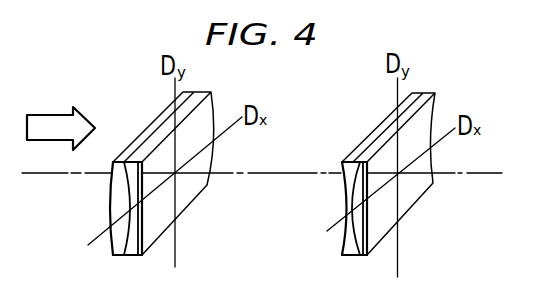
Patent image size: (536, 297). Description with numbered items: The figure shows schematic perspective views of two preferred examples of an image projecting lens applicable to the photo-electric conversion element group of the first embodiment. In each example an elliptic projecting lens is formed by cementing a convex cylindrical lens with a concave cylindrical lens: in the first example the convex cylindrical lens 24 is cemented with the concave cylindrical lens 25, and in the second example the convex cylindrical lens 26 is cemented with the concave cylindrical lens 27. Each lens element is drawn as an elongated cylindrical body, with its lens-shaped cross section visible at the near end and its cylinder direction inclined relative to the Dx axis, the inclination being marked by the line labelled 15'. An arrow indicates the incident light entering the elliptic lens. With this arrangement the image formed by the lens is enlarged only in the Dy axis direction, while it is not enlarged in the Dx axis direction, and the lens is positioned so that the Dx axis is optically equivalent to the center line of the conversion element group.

The cylinder axis direction line (Dx) inclined at 15' is at (276, 160).
The convex cylindrical lens 24 is at (117, 240).
The concave cylindrical lens 25 is at (135, 247).
The convex cylindrical lens 26 is at (344, 242).
The concave cylindrical lens 27 is at (362, 242).